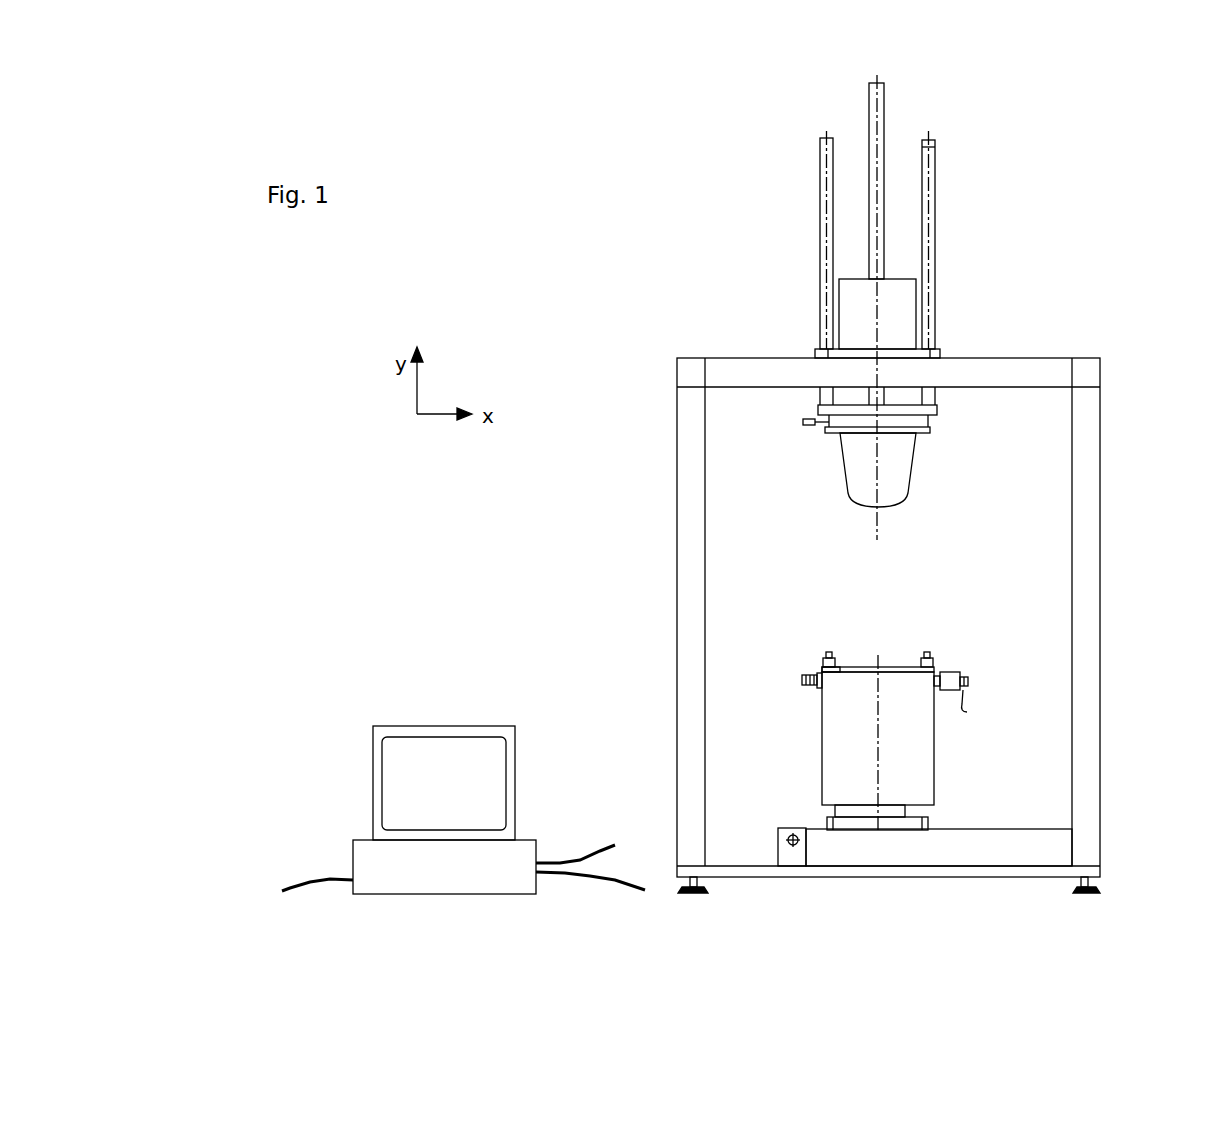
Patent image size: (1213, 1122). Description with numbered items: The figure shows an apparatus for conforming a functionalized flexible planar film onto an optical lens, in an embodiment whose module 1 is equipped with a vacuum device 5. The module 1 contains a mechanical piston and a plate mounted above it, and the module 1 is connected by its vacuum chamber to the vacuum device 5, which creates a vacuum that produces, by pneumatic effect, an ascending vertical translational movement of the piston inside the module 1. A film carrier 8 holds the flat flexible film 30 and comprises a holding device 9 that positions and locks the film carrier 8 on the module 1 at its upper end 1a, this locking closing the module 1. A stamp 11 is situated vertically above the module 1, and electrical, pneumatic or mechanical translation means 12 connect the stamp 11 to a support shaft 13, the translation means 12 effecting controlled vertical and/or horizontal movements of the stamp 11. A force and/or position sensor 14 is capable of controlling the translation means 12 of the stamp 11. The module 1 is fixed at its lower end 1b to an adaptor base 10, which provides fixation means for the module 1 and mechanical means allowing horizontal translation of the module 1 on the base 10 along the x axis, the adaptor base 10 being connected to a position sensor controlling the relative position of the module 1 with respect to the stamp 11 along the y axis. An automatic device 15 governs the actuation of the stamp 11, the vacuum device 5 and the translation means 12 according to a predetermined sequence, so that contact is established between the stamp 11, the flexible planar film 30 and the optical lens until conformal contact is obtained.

The module 1 is at (913, 749).
The upper end of the module 1a is at (913, 681).
The lower end of the module 1b is at (915, 814).
The vacuum device 5 is at (802, 679).
The film carrier 8 is at (845, 662).
The holding device 9 is at (962, 671).
The adaptor base 10 is at (1035, 845).
The stamp 11 is at (893, 460).
The translation means 12 is at (903, 297).
The support shaft 13 is at (829, 221).
The position sensor 14 is at (845, 421).
The automatic device 15 is at (380, 855).
The flexible planar film 30 is at (823, 668).